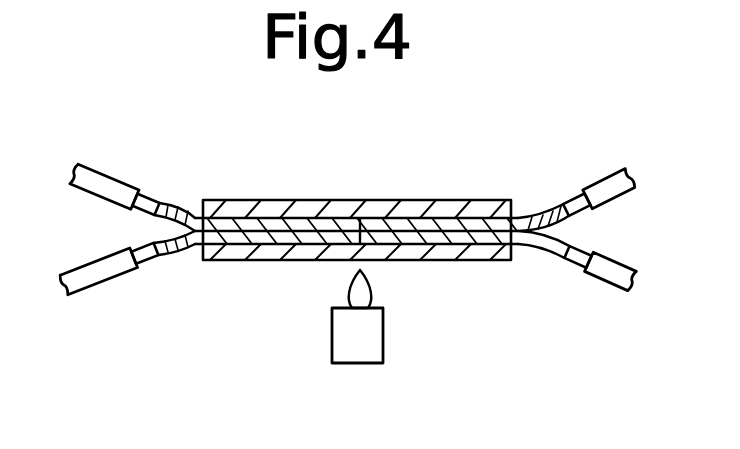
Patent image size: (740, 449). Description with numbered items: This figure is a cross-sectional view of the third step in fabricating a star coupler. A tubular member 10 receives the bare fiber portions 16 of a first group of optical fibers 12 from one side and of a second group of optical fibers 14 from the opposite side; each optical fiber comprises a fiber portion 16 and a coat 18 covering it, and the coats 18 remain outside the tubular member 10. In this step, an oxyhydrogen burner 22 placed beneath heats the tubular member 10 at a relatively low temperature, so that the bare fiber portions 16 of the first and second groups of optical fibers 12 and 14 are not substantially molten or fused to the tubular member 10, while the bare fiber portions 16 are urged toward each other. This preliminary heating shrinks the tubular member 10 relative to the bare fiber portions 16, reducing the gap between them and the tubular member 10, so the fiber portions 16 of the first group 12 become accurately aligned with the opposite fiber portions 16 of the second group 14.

The tubular member 10 is at (258, 210).
The first group of optical fibers 12 is at (130, 256).
The second group of optical fibers 14 is at (590, 262).
The fiber portion 16 is at (298, 228).
The coat 18 is at (82, 276).
The oxyhydrogen burner 22 is at (385, 347).